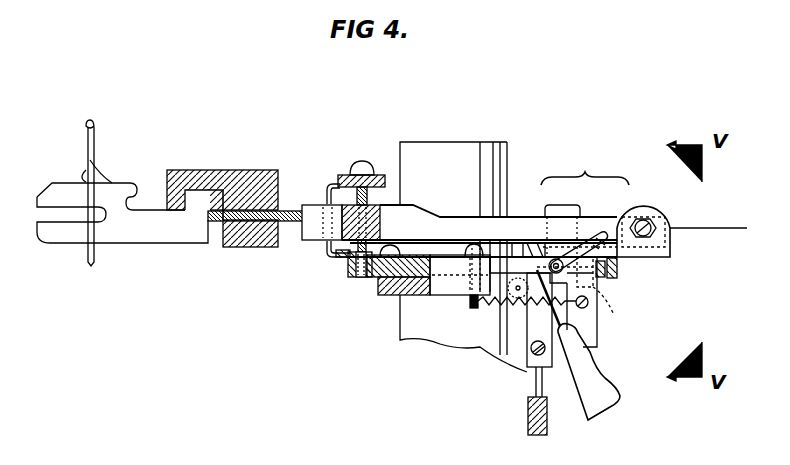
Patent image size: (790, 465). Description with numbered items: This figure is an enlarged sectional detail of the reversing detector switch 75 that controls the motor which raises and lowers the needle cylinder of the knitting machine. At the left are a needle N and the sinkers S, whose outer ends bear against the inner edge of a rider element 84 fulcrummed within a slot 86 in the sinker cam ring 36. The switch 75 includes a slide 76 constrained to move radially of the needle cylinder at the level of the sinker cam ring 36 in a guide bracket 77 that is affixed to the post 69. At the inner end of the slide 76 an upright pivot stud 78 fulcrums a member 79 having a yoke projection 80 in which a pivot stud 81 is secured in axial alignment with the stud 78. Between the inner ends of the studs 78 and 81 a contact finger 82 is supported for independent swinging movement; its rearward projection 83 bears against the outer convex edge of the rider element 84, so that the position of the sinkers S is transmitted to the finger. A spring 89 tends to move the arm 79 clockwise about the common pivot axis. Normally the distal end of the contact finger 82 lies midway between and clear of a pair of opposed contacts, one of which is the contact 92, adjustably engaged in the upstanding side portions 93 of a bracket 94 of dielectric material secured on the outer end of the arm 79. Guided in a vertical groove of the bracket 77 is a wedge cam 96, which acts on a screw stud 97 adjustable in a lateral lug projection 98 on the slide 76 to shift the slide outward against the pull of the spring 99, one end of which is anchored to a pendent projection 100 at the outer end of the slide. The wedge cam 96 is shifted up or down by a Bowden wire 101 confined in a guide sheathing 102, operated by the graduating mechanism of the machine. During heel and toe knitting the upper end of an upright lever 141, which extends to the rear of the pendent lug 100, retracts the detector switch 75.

The needle N is at (87, 138).
The sinkers S is at (134, 240).
The sinker cam ring 36 is at (238, 170).
The slot 86 is at (254, 238).
The rider element 84 is at (292, 210).
The rearward projection 83 is at (316, 237).
The yoke projection 80 is at (330, 184).
The pivot stud 81 is at (364, 164).
The upright pivot stud 78 is at (360, 278).
The contact finger 82 is at (517, 225).
The post 69 is at (487, 158).
The member 79 is at (412, 256).
The slide 76 is at (392, 296).
The guide bracket 77 is at (458, 296).
The pendent projection 100 is at (600, 345).
The spring 99 is at (520, 300).
The wedge cam 96 is at (533, 328).
The Bowden wire 101 is at (534, 386).
The guide sheathing 102 is at (548, 422).
The upright lever 141 is at (603, 412).
The spring 89 is at (622, 256).
The screw stud 97 is at (620, 275).
The lateral lug projection 98 is at (610, 310).
The upstanding side portions 93 is at (672, 210).
The contact 92 is at (644, 220).
The bracket 94 is at (675, 253).
The reversing detector switch 75 is at (585, 169).